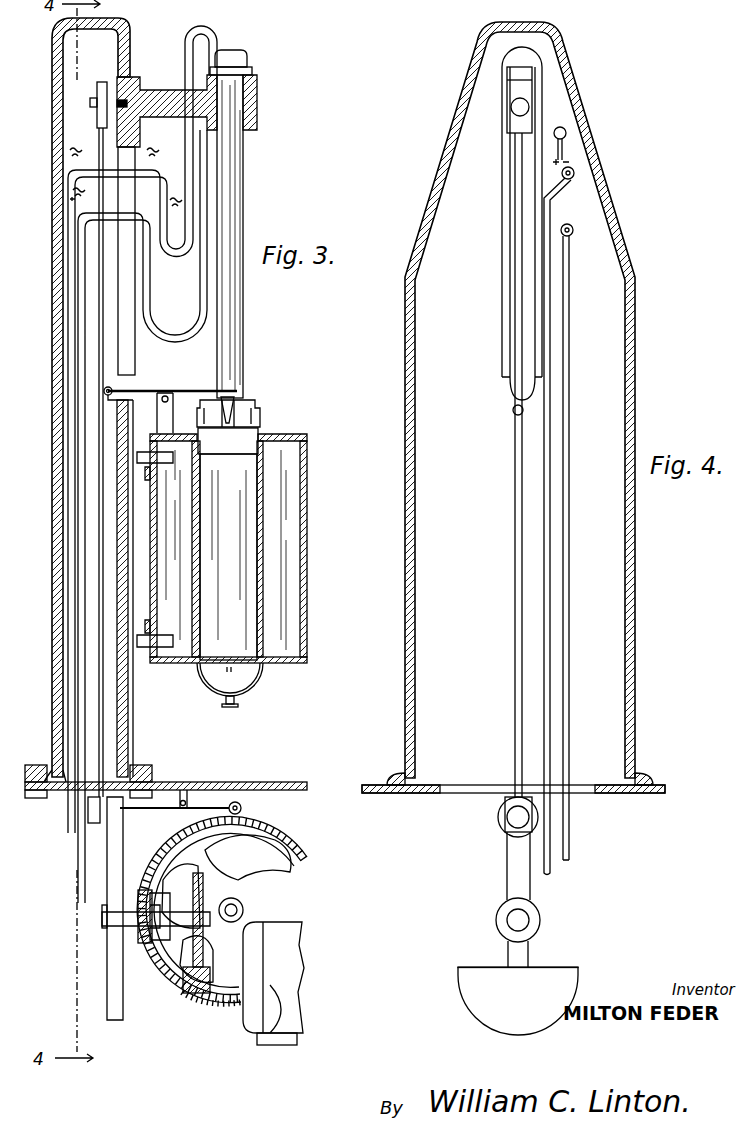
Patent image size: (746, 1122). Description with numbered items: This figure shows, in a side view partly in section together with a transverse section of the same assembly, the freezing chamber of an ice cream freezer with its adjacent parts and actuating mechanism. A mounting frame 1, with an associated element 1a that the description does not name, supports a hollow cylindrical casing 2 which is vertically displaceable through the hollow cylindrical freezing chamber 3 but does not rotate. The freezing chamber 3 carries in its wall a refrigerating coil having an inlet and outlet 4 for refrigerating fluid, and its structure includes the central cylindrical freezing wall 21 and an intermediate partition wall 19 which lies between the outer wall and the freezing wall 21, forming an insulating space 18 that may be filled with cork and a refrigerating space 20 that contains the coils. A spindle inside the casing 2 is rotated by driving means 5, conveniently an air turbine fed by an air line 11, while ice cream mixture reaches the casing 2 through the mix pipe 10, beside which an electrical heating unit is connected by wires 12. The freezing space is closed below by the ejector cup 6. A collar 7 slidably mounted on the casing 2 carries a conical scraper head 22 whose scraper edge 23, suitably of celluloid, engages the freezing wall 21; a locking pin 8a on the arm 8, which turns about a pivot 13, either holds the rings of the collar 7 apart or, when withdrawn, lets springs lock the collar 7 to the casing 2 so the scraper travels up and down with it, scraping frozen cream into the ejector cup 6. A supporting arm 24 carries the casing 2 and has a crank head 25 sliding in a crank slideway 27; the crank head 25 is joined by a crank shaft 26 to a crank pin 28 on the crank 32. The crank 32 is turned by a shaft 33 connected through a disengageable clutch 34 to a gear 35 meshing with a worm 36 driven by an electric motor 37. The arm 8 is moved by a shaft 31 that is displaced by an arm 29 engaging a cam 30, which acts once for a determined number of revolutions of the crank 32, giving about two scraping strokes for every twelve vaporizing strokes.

In FIG. 3, the mounting frame 1 is at (52, 348).
In FIG. 4, the mounting frame 1 is at (614, 216).
In FIG. 3, the base plate 1a is at (200, 770).
In FIG. 3, the hollow cylindrical casing 2 is at (243, 210).
In FIG. 3, the freezing chamber 3 is at (307, 547).
In FIG. 3, the inlet and outlet 4 is at (150, 453).
In FIG. 3, the driving means 5 is at (247, 58).
In FIG. 3, the ejector cup 6 is at (234, 702).
In FIG. 3, the collar 7 is at (260, 413).
In FIG. 3, the arm 8 is at (237, 391).
In FIG. 3, the locking pin 8a is at (240, 394).
In FIG. 3, the pipe 10 is at (157, 300).
In FIG. 4, the pipe 10 is at (569, 714).
In FIG. 3, the air line 11 is at (185, 40).
In FIG. 4, the air line 11 is at (552, 210).
In FIG. 3, the wires 12 is at (84, 152).
In FIG. 4, the wires 12 is at (563, 150).
In FIG. 3, the pivot 13 is at (157, 398).
In FIG. 3, the intermediate insulating space 18 is at (307, 660).
In FIG. 3, the intermediate partition wall 19 is at (280, 663).
In FIG. 3, the refrigerating space 20 is at (262, 670).
In FIG. 3, the freezing wall 21 is at (205, 675).
In FIG. 3, the conical scraper head 22 is at (243, 455).
In FIG. 3, the scraper edge 23 is at (225, 458).
In FIG. 3, the supporting arm 24 is at (257, 95).
In FIG. 4, the supporting arm 24 is at (522, 60).
In FIG. 3, the crank head 25 is at (97, 84).
In FIG. 4, the crank head 25 is at (530, 93).
In FIG. 3, the crank shaft 26 is at (99, 272).
In FIG. 4, the crank shaft 26 is at (515, 468).
In FIG. 4, the crank slideway 27 is at (500, 172).
In FIG. 3, the crank pin 28 is at (95, 823).
In FIG. 4, the crank pin 28 is at (505, 832).
In FIG. 3, the arm 29 is at (241, 808).
In FIG. 3, the cam 30 is at (290, 848).
In FIG. 3, the shaft 31 is at (117, 550).
In FIG. 3, the crank 32 is at (123, 1005).
In FIG. 4, the crank 32 is at (547, 972).
In FIG. 3, the shaft 33 is at (138, 890).
In FIG. 3, the disengageable clutch 34 is at (166, 900).
In FIG. 3, the gear 35 is at (203, 930).
In FIG. 3, the worm 36 is at (214, 963).
In FIG. 3, the electric motor 37 is at (303, 968).